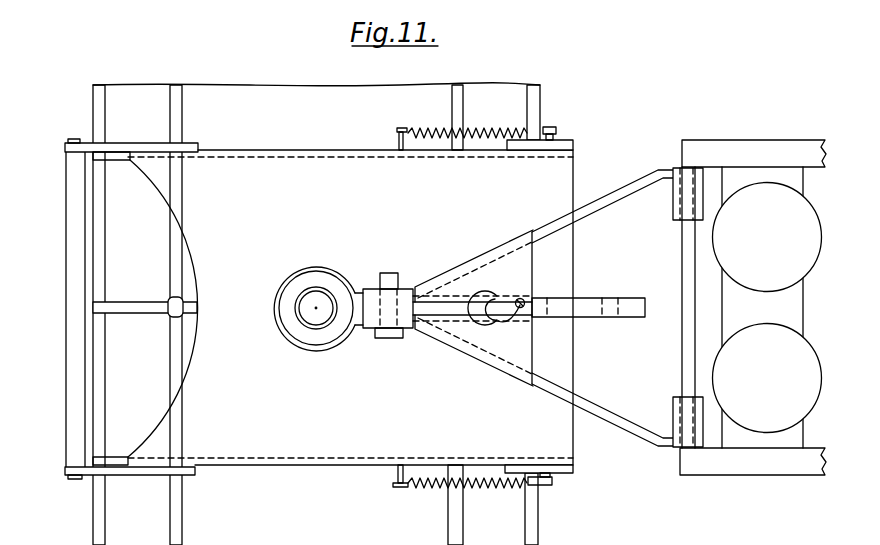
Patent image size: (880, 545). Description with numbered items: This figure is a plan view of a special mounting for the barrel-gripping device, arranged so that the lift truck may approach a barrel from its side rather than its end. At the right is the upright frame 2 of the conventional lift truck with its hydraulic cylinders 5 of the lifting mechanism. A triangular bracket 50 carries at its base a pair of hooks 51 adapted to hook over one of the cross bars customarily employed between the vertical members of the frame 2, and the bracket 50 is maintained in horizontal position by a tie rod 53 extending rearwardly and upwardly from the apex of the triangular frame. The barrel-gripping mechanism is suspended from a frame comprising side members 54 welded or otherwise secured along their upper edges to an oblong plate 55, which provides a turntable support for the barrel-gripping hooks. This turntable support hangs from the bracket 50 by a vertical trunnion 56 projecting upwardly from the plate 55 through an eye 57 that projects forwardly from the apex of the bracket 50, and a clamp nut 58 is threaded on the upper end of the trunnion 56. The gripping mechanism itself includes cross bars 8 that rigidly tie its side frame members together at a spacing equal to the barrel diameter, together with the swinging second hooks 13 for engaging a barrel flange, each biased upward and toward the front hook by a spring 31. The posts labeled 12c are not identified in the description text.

The standards / posts 12c is at (112, 142).
The cross bars 8 is at (85, 252).
The oblong plate 55 is at (292, 210).
The side members 54 is at (238, 149).
The spring 31 is at (441, 128).
The second hook 13 is at (558, 135).
The clamp nut 58 is at (300, 330).
The vertical trunnion 56 is at (323, 293).
The eye 57 is at (318, 343).
The tie rod 53 is at (524, 299).
The triangular bracket 50 is at (627, 184).
The hooks 51 is at (673, 210).
The upright frame 2 is at (765, 476).
The hydraulic cylinders 5 is at (770, 249).